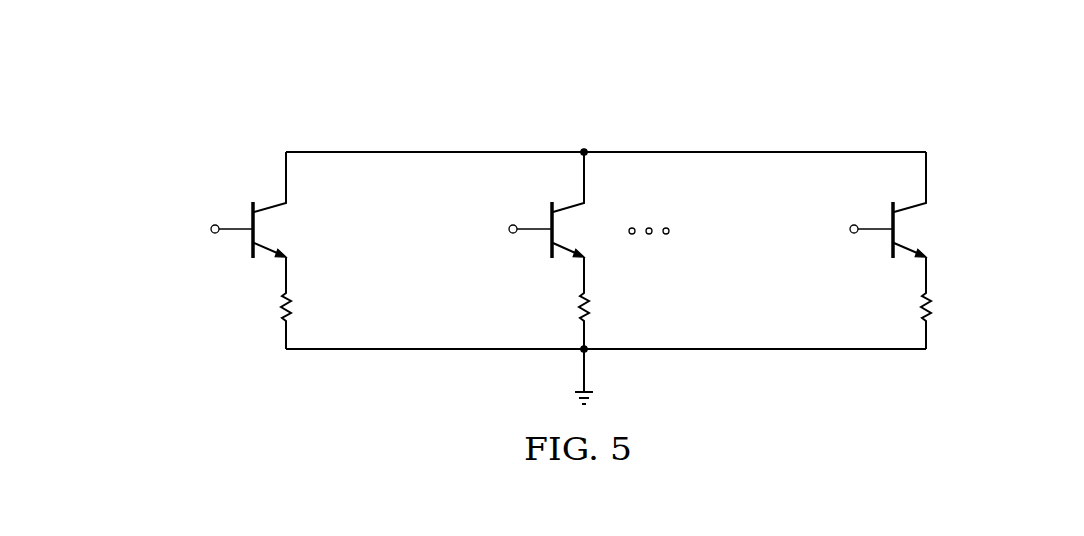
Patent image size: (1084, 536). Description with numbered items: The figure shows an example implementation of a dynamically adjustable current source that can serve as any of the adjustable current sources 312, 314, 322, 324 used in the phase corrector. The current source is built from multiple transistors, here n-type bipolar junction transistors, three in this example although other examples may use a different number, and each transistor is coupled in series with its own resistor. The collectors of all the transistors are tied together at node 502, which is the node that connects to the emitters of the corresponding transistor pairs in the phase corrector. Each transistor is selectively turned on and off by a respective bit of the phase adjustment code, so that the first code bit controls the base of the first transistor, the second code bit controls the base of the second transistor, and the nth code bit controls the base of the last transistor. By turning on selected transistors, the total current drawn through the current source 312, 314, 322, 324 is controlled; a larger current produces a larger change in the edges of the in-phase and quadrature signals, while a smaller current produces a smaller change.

The adjustable current source 312 is at (501, 225).
The adjustable current source 314 is at (501, 225).
The adjustable current source 322 is at (501, 225).
The adjustable current source 324 is at (501, 225).
The node 502 is at (755, 150).